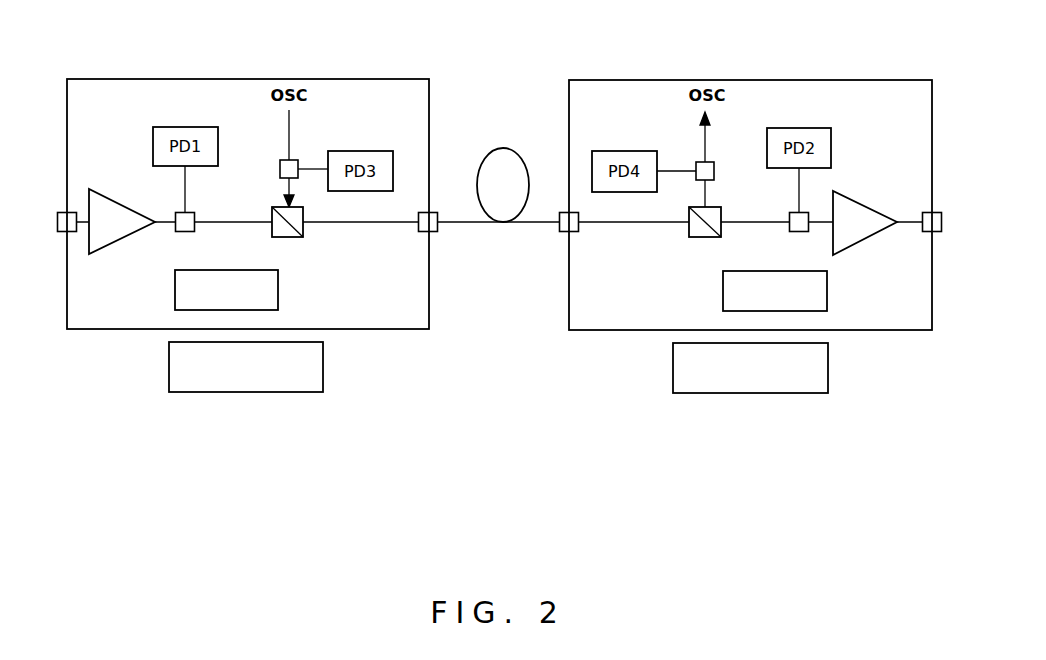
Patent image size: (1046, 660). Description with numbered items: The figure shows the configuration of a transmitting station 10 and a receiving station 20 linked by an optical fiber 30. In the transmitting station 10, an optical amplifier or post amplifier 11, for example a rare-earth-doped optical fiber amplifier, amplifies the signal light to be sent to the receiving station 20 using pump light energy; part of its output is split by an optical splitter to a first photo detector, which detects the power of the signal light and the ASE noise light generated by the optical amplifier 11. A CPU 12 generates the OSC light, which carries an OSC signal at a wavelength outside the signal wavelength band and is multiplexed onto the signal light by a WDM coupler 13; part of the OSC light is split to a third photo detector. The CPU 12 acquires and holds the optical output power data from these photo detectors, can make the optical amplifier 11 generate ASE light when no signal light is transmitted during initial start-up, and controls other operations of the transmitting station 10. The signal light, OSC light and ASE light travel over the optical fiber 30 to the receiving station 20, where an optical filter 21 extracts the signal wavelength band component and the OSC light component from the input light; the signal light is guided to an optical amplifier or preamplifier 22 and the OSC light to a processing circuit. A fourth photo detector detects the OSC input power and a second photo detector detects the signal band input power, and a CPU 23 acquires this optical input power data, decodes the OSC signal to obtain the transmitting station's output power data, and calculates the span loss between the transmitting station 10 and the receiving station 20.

The transmitting station 10 is at (250, 79).
The optical amplifier (post amplifier) 11 is at (122, 205).
The CPU 12 is at (175, 290).
The WDM coupler 13 is at (300, 240).
The receiving station 20 is at (753, 80).
The optical filter 21 is at (695, 240).
The optical amplifier (preamplifier) 22 is at (866, 207).
The CPU 23 is at (827, 291).
The optical fiber 30 is at (503, 148).